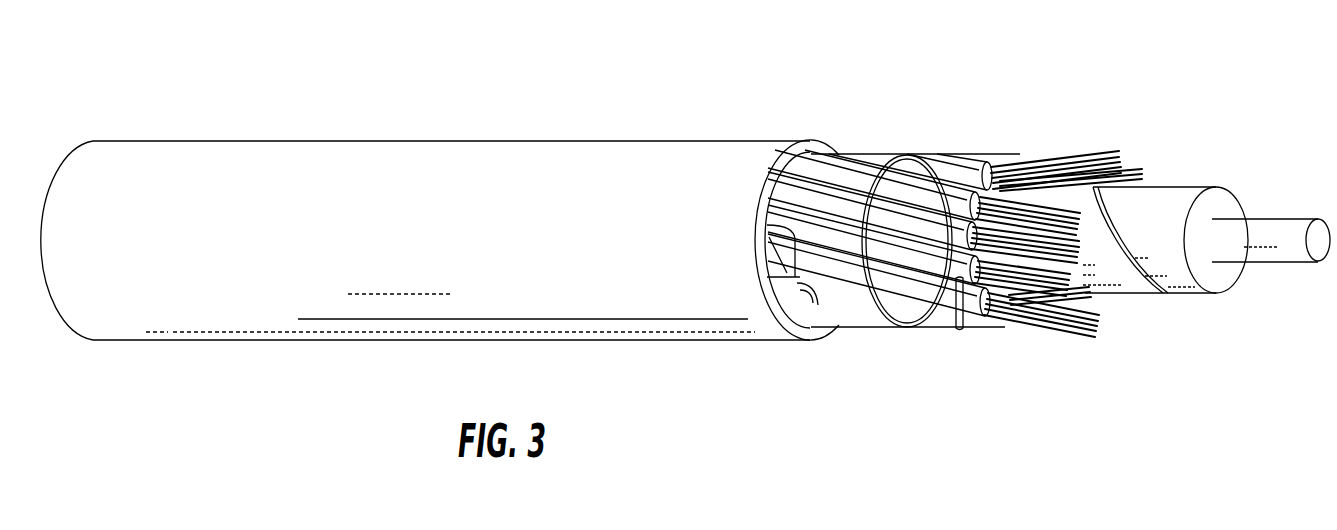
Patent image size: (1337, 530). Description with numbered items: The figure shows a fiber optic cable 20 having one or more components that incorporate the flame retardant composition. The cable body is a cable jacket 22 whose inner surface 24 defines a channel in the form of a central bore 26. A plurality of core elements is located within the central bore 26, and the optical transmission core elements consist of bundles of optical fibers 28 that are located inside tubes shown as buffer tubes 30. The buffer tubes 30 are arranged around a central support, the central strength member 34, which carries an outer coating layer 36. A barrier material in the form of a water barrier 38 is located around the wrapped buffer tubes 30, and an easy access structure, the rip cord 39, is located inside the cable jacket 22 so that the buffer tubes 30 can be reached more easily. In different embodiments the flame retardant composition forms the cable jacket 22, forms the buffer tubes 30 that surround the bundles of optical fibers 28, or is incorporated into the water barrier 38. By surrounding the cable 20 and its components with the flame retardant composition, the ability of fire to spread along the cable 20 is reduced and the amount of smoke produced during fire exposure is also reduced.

The cable 20 is at (1195, 88).
The cable jacket 22 is at (500, 147).
The inner surface 24 is at (800, 330).
The central bore 26 is at (815, 310).
The optical fibers 28 is at (1136, 163).
The buffer tubes 30 is at (908, 190).
The central strength member 34 is at (1285, 235).
The outer coating layer 36 is at (1228, 205).
The water barrier 38 is at (868, 152).
The rip cord 39 is at (767, 226).